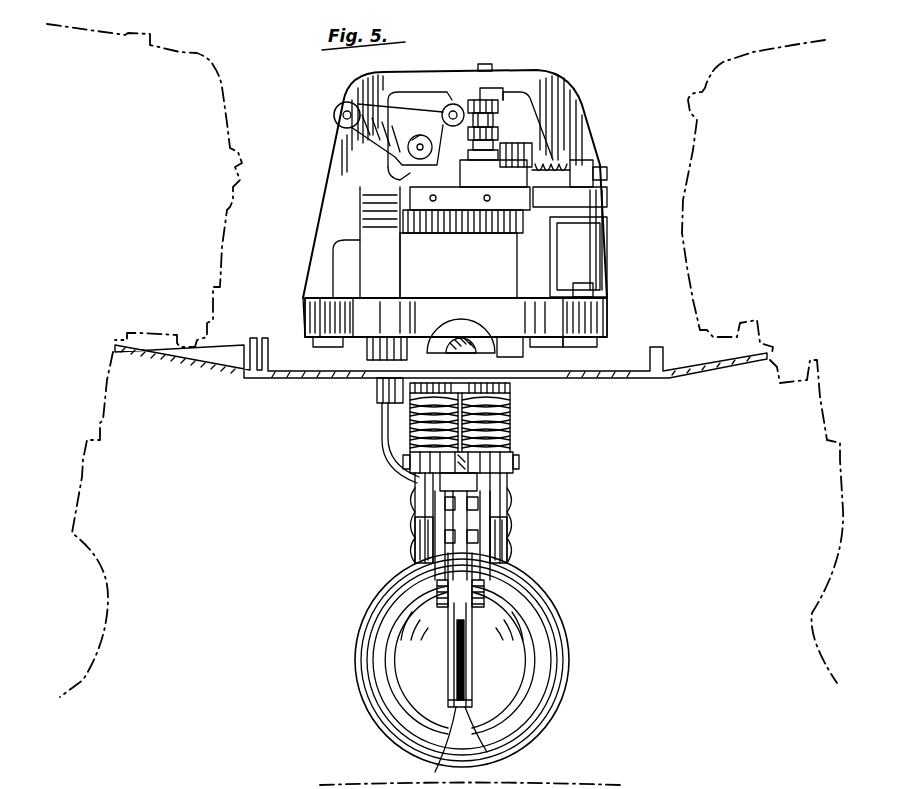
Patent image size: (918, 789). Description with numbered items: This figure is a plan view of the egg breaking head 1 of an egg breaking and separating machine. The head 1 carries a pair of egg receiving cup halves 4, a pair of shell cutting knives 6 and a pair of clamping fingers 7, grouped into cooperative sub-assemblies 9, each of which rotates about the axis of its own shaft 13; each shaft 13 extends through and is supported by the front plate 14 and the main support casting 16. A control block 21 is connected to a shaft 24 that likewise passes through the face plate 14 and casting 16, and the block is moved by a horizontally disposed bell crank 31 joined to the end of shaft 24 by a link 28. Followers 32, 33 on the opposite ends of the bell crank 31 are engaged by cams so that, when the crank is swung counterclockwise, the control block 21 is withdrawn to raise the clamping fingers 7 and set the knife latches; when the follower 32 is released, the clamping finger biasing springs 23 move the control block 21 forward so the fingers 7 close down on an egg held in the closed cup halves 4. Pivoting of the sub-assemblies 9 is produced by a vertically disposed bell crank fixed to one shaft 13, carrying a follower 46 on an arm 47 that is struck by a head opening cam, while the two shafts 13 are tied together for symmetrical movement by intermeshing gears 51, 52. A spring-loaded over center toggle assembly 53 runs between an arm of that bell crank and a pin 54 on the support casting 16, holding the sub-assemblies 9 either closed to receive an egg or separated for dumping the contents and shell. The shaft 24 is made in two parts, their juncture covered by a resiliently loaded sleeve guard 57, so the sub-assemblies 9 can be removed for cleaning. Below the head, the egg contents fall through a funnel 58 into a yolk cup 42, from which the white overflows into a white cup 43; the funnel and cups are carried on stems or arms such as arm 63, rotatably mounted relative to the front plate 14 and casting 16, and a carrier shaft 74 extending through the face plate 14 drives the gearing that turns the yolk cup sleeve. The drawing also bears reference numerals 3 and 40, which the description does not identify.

The egg breaking head 1 is at (297, 520).
The valve body ring 3 is at (565, 710).
The egg receiving cup halves 4 is at (530, 668).
The shell cutting knives 6 is at (437, 766).
The clamping fingers 7 is at (483, 597).
The sub-assemblies 9 is at (527, 519).
The shaft 13 is at (480, 542).
The front plate 14 is at (218, 375).
The main support casting 16 is at (313, 313).
The control block 21 is at (480, 482).
The clamping finger biasing springs 23 is at (413, 428).
The shaft 24 is at (402, 184).
The link 28 is at (455, 104).
The bell crank 31 is at (363, 128).
The follower 32 is at (333, 107).
The follower 33 is at (459, 107).
The adjusting block 40 is at (540, 187).
The yolk cup 42 is at (470, 720).
The white cup 43 is at (356, 640).
The follower 46 is at (518, 148).
The arm 47 is at (493, 173).
The intermeshing gear 51 is at (460, 236).
The intermeshing gear 52 is at (428, 236).
The spring-loaded over center toggle assembly 53 is at (548, 186).
The pin 54 is at (592, 162).
The resiliently loaded sleeve guard 57 is at (417, 353).
The funnel 58 is at (565, 640).
The stem or arm 63 is at (397, 459).
The carrier shaft 74 is at (492, 68).